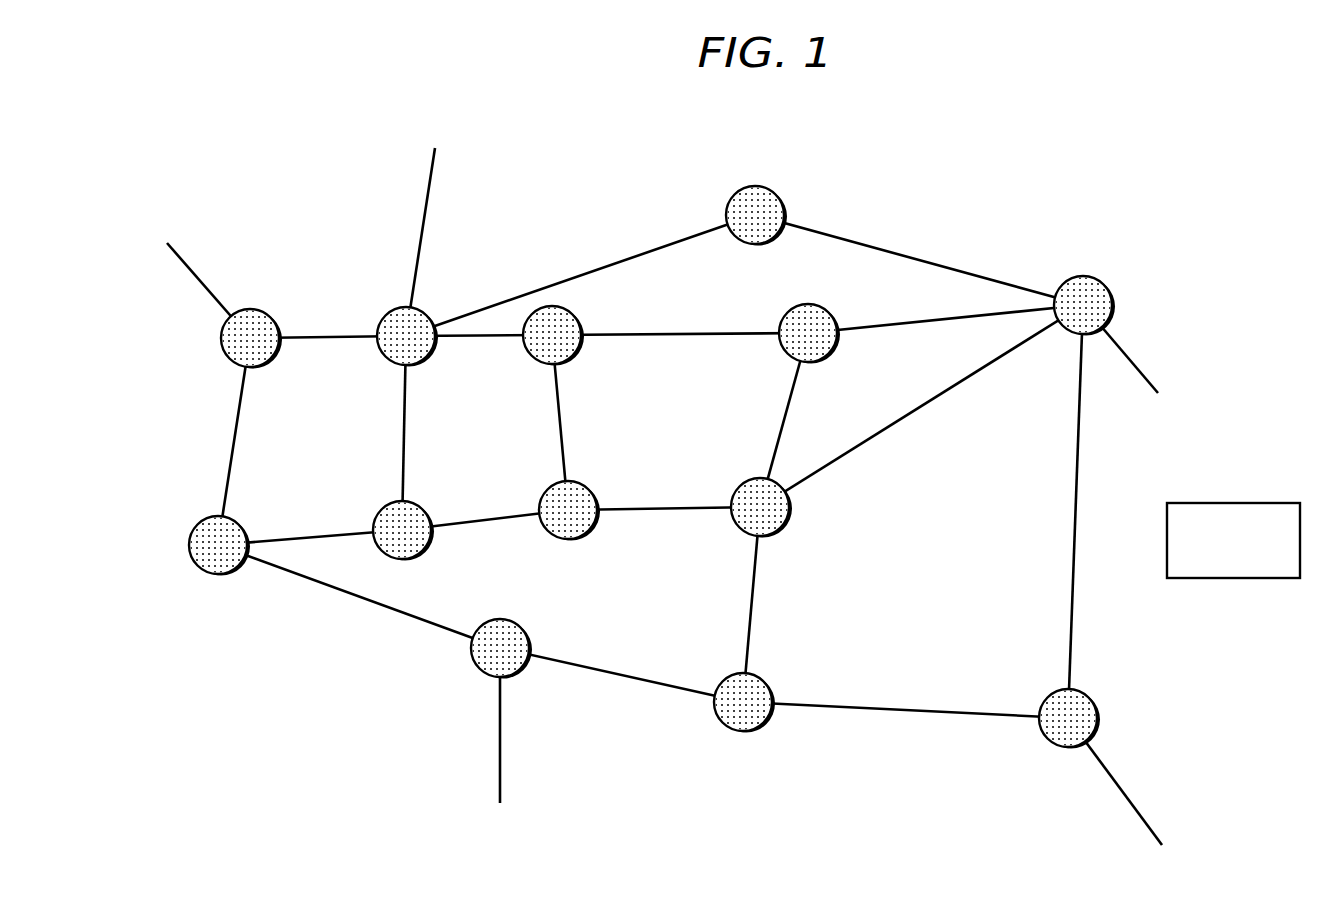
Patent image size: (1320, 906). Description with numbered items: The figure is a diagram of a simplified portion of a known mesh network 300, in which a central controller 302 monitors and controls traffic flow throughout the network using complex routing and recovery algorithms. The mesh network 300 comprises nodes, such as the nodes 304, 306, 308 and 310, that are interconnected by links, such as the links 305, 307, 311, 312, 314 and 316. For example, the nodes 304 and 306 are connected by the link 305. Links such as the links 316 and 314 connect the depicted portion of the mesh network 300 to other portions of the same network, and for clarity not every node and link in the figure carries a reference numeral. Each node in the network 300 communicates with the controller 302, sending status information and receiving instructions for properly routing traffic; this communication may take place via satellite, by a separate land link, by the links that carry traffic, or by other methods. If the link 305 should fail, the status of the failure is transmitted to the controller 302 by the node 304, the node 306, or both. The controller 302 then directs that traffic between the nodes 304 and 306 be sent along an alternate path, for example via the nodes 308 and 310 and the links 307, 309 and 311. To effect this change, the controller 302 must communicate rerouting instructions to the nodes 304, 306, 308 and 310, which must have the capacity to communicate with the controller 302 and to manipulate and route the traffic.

The mesh network 300 is at (238, 165).
The controller 302 is at (1236, 503).
The node 304 is at (410, 558).
The link 305 is at (482, 522).
The node 306 is at (580, 536).
The link 307 is at (403, 431).
The node 308 is at (385, 312).
The link 309 is at (503, 340).
The node 310 is at (578, 315).
The link 311 is at (562, 420).
The link 312 is at (468, 340).
The link 314 is at (498, 740).
The link 316 is at (427, 184).